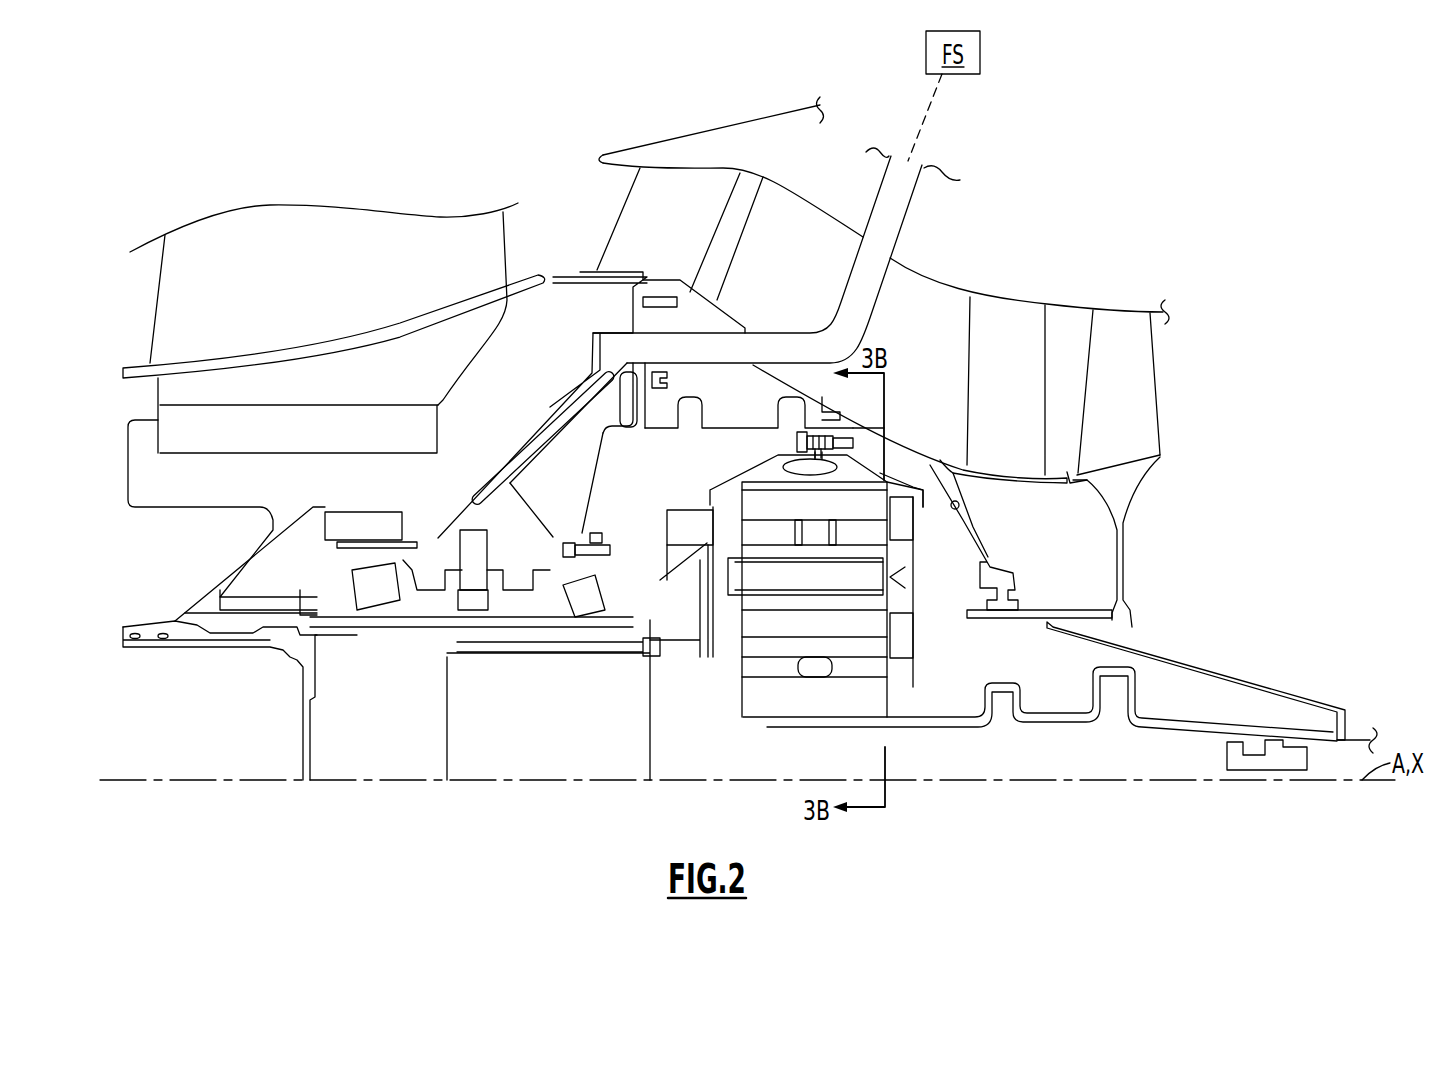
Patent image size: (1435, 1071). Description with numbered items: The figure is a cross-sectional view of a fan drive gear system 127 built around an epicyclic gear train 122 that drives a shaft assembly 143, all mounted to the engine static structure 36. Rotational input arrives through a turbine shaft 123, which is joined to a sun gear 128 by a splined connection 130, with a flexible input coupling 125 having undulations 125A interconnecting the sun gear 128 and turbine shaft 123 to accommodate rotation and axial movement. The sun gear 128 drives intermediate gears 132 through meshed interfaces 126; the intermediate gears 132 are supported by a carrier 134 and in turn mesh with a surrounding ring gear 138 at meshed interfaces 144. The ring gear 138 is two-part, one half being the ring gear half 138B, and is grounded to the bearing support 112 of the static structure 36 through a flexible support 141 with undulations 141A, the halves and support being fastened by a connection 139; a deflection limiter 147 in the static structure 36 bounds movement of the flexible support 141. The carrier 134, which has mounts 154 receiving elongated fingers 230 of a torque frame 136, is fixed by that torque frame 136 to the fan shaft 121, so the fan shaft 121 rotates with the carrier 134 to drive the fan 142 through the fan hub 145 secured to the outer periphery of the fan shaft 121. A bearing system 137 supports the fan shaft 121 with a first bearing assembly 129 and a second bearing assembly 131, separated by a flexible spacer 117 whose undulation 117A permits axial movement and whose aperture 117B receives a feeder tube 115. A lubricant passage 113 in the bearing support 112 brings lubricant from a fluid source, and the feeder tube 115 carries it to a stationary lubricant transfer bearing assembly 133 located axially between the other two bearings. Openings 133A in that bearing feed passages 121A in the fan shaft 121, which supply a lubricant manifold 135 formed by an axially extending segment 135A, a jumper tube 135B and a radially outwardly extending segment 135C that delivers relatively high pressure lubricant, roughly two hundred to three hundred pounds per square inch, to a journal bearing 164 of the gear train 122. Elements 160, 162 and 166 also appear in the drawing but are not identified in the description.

The fan drive gear system 127 is at (108, 160).
The fan 142 is at (330, 296).
The fan hub 145 is at (185, 610).
The shaft assembly 143 is at (236, 680).
The bearing system 137 is at (328, 736).
The fan shaft 121 is at (360, 637).
The passages 121A is at (442, 640).
The second bearing assembly 131 is at (403, 560).
The feeder tube 115 is at (443, 537).
The bearing support 112 is at (567, 393).
The lubricant passage 113 is at (906, 222).
The flexible support 141 is at (798, 385).
The undulations 141A is at (790, 397).
The connection 139 is at (888, 400).
The deflection limiter 147 is at (832, 417).
The openings 133A is at (890, 433).
The gear housing 160 is at (902, 503).
The engine static structure 36 is at (963, 508).
The epicyclic gear train 122 is at (648, 460).
The ring gear 138 is at (757, 468).
The meshed interfaces 144 is at (777, 455).
The second ring gear half 138B is at (778, 452).
The journal bearing 164 is at (903, 550).
The bearing 166 is at (913, 623).
The bearing support 162 is at (907, 660).
The mounts 154 is at (713, 495).
The elongated fingers 230 is at (677, 550).
The torque frame 136 is at (657, 552).
The lubricant transfer bearing assembly 133 is at (515, 518).
The flexible spacer 117 is at (487, 573).
The undulation 117A is at (392, 587).
The aperture 117B is at (375, 602).
The first bearing assembly 129 is at (607, 567).
The lubricant manifold 135 is at (582, 670).
The axially extending segment 135A is at (512, 653).
The jumper tube 135B is at (653, 660).
The radially outwardly extending segment 135C is at (697, 673).
The carrier 134 is at (712, 664).
The intermediate gears 132 is at (752, 648).
The sun gear 128 is at (757, 715).
The splined connection 130 is at (822, 718).
The meshed interfaces 126 is at (760, 705).
The flexible input coupling 125 is at (1133, 650).
The undulations 125A is at (1140, 685).
The turbine shaft 123 is at (1178, 720).